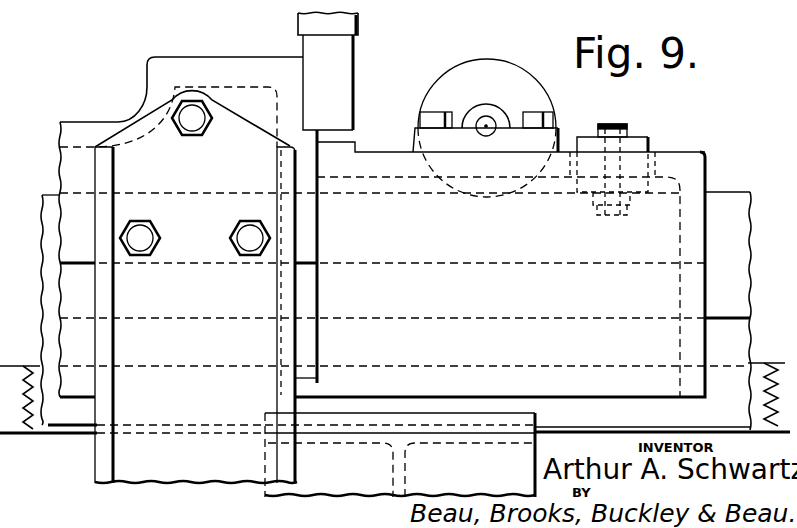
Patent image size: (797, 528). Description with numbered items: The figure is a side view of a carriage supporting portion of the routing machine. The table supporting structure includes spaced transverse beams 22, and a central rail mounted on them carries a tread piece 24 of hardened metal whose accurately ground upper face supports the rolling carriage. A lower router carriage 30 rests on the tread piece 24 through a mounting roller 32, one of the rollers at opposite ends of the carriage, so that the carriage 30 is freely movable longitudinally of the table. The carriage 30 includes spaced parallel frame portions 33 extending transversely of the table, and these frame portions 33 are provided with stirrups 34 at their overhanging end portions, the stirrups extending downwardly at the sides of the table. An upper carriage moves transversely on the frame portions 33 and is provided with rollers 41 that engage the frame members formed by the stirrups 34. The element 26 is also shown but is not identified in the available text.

The transverse beams 22 is at (400, 455).
The tread piece 24 is at (733, 200).
The frame plate 26 is at (39, 433).
The lower router carriage 30 is at (680, 150).
The mounting roller 32 is at (433, 102).
The frame portions 33 is at (335, 85).
The stirrups 34 is at (181, 270).
The rollers 41 is at (350, 23).